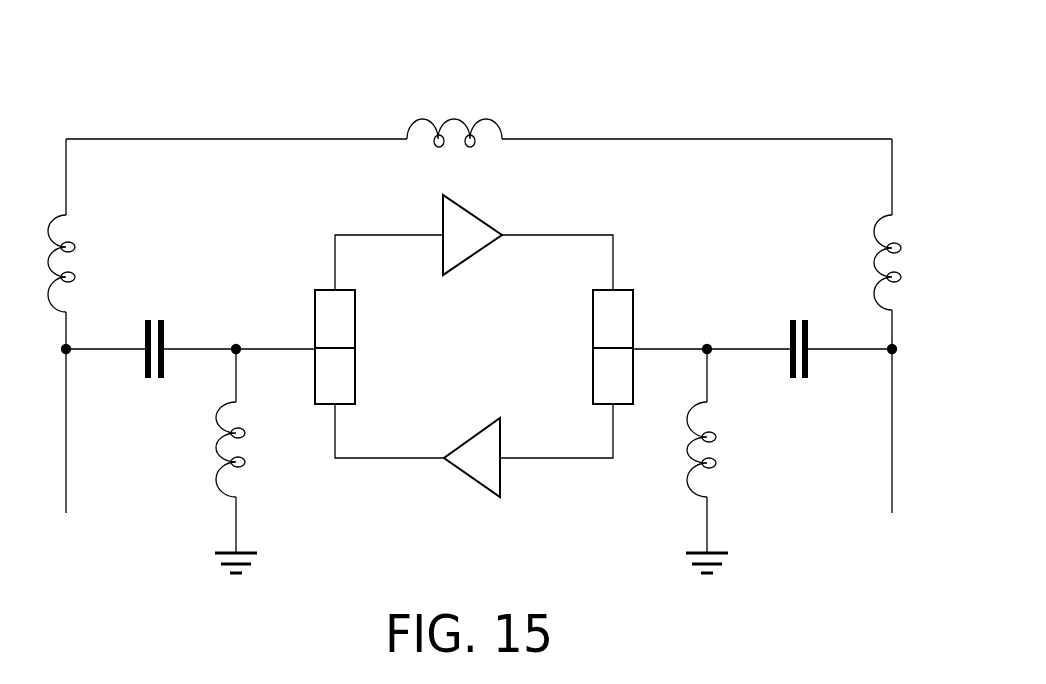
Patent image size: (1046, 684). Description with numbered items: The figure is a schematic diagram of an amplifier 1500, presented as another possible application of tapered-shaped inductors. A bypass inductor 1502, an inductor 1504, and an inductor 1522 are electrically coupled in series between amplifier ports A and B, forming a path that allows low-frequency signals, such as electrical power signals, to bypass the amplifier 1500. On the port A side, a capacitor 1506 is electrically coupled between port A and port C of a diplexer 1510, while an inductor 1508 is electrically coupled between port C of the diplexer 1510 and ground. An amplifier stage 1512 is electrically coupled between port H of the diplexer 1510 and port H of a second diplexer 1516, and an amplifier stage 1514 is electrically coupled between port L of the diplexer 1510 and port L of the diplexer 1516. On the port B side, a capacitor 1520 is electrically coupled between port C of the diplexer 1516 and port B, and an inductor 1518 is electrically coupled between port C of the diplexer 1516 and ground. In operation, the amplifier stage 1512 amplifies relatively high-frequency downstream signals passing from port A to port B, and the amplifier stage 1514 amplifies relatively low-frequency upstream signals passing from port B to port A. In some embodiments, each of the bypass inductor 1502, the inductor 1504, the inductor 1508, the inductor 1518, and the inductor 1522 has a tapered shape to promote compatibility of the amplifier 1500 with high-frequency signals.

The amplifier 1500 is at (910, 75).
The bypass inductor 1502 is at (485, 97).
The inductor 1504 is at (92, 232).
The capacitor 1506 is at (166, 306).
The inductor 1508 is at (200, 440).
The diplexer 1510 is at (292, 268).
The amplifier stage 1512 is at (485, 202).
The amplifier stage 1514 is at (465, 415).
The diplexer 1516 is at (635, 268).
The inductor 1518 is at (730, 440).
The capacitor 1520 is at (762, 305).
The inductor 1522 is at (857, 232).